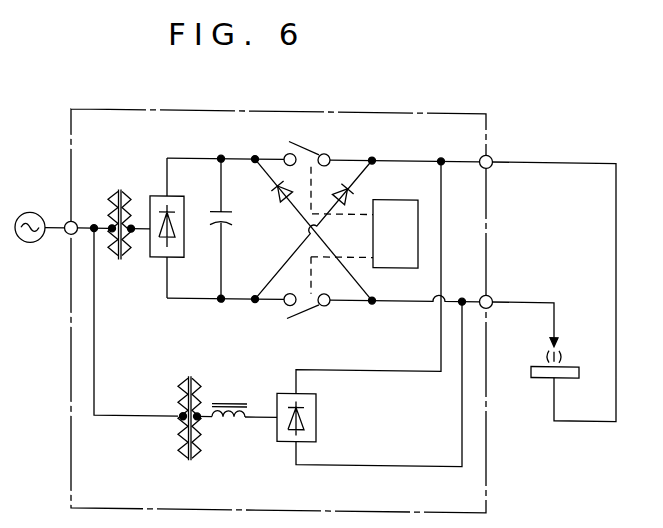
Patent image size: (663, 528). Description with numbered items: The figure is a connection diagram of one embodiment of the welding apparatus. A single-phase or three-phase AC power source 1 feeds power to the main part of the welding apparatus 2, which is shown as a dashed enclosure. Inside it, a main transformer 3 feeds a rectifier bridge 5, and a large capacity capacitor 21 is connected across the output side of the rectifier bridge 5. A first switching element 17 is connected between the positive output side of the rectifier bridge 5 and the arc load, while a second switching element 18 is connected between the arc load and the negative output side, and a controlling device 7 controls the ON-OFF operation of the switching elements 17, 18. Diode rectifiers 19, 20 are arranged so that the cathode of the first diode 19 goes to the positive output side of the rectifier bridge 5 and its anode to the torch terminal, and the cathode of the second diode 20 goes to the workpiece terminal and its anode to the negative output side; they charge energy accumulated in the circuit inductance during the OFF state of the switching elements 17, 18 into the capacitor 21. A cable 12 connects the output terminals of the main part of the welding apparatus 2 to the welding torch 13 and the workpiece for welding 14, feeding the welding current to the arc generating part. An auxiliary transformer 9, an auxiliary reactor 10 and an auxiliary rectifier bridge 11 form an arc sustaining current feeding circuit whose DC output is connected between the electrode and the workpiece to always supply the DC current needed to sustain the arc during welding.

The AC power source 1 is at (27, 242).
The main part of welding apparatus 2 is at (416, 108).
The main transformer 3 is at (118, 188).
The rectifier bridge 5 is at (153, 194).
The controlling device 7 is at (388, 263).
The auxiliary transformer 9 is at (188, 376).
The auxiliary reactor 10 is at (227, 398).
The auxiliary rectifier bridge 11 is at (318, 423).
The cable 12 is at (541, 156).
The welding torch 13 is at (557, 338).
The workpiece for welding 14 is at (528, 373).
The first switching element 17 is at (313, 138).
The second switching element 18 is at (312, 310).
The first rectifier diode 19 is at (276, 205).
The second rectifier diode 20 is at (347, 189).
The large capacity capacitor 21 is at (232, 210).